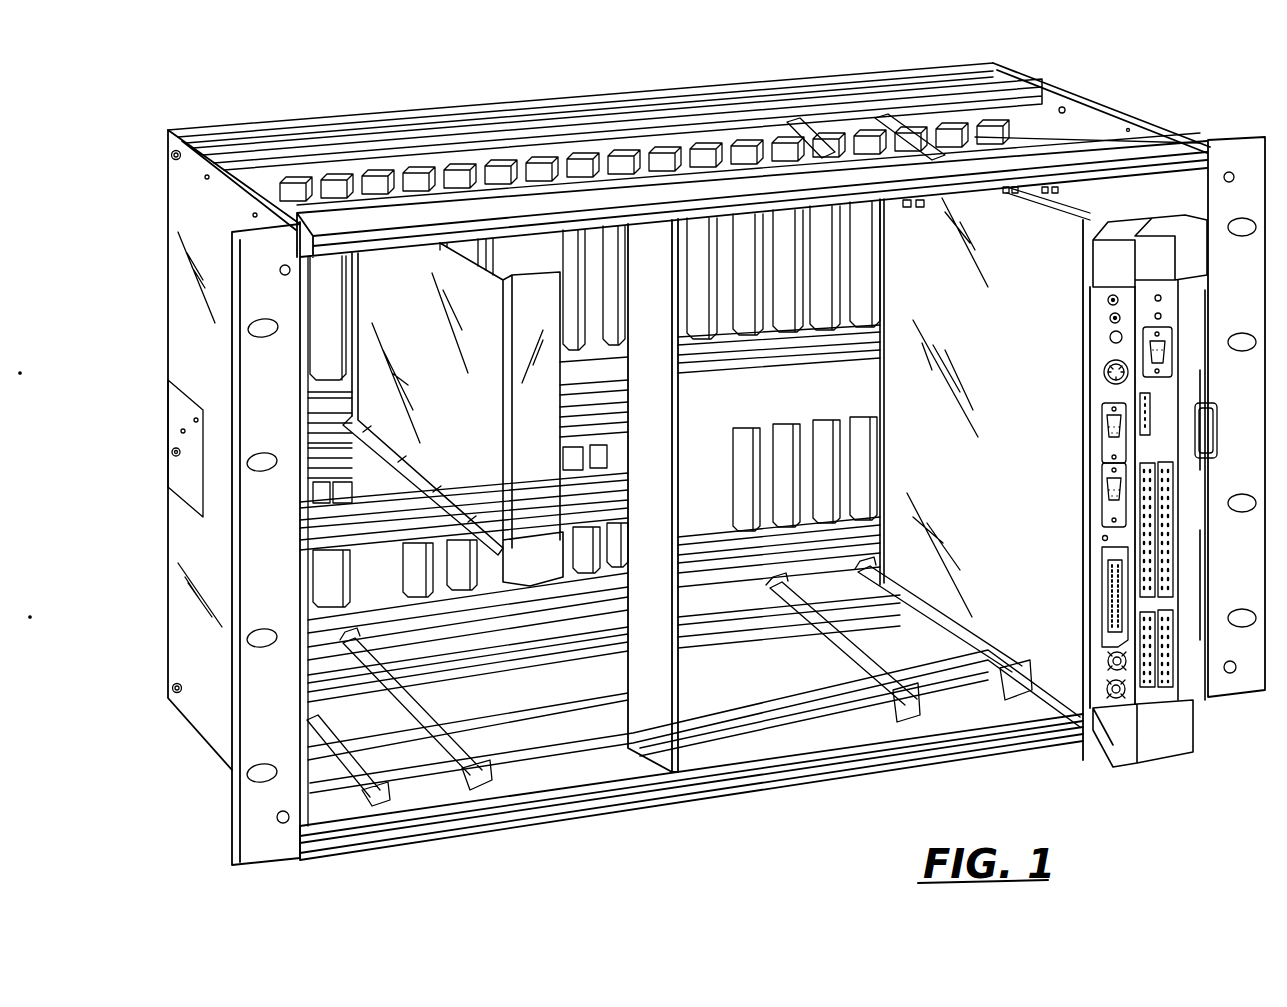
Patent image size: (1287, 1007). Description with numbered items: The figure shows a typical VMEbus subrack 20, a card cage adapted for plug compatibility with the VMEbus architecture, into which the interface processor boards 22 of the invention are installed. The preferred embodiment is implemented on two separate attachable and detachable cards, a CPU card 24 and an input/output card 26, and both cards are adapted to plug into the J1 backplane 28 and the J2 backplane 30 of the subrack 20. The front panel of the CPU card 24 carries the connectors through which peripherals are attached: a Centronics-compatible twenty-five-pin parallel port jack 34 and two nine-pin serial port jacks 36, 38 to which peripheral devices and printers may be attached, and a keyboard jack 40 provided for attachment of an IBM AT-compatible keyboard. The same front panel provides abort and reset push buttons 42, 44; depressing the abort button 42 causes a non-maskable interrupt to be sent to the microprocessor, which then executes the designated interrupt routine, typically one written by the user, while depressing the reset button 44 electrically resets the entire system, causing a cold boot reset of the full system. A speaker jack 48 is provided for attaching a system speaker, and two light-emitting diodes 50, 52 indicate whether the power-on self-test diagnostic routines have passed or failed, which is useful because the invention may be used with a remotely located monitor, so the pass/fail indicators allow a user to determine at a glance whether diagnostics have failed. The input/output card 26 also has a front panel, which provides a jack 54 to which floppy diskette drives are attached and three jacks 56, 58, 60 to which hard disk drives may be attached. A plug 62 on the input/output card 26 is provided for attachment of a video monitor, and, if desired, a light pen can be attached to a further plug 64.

The VMEbus subrack 20 is at (642, 452).
The interface processor boards 22 is at (1129, 502).
The CPU card 24 is at (1088, 325).
The input/output card 26 is at (1173, 308).
The J1 backplane 28 is at (730, 150).
The J2 backplane 30 is at (702, 547).
The DB-25 parallel port jack 34 is at (1105, 599).
The DB-9 serial port jack 36 is at (1105, 430).
The DB-9 serial port jack 38 is at (1107, 493).
The keyboard jack 40 is at (1105, 373).
The abort push button 42 is at (1108, 662).
The reset push button 44 is at (1107, 690).
The speaker jack 48 is at (1110, 337).
The light-emitting diode 50 is at (1110, 297).
The light-emitting diode 52 is at (1110, 318).
The floppy diskette drive jack 54 is at (1147, 500).
The hard disk drive jack 56 is at (1163, 517).
The hard disk drive jack 58 is at (1148, 617).
The hard disk drive jack 60 is at (1163, 625).
The video monitor plug 62 is at (1160, 362).
The light pen plug 64 is at (1150, 405).